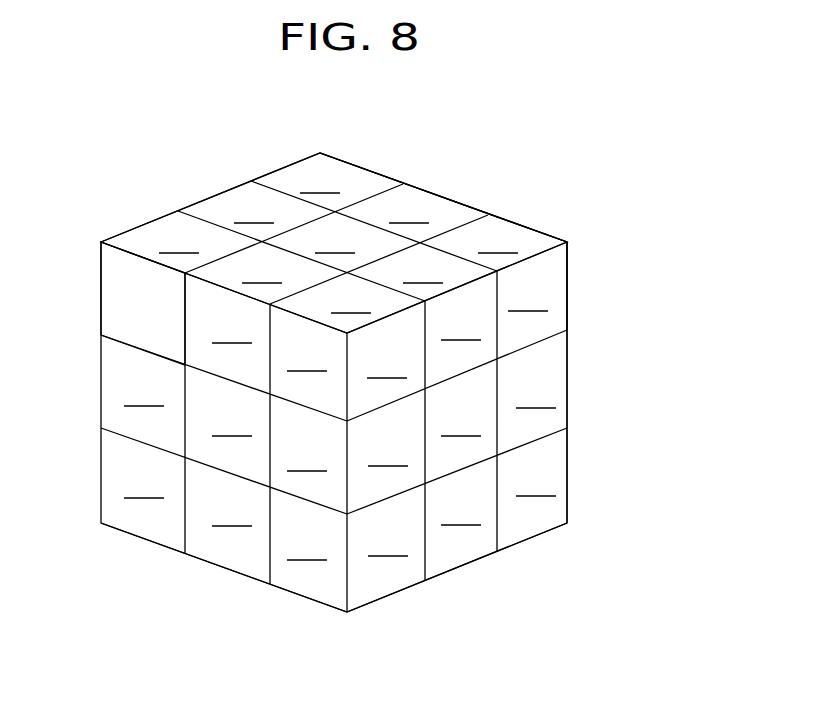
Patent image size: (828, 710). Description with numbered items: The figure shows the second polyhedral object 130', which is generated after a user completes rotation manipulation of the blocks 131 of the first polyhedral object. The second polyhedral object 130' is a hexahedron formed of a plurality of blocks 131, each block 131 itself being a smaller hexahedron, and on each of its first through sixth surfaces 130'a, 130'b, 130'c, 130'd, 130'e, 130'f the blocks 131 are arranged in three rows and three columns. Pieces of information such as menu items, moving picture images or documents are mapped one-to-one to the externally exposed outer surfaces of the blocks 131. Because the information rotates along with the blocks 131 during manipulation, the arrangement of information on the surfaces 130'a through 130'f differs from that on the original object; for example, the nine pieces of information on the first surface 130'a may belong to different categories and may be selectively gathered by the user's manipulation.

The second polyhedral object 130' is at (364, 365).
The first surface 130'a is at (209, 567).
The second surface 130'b is at (624, 382).
The third surface 130'c is at (622, 298).
The fourth surface 130'd is at (334, 228).
The fifth surface 130'e is at (479, 197).
The sixth surface 130'f is at (478, 567).
The block 131 is at (108, 298).